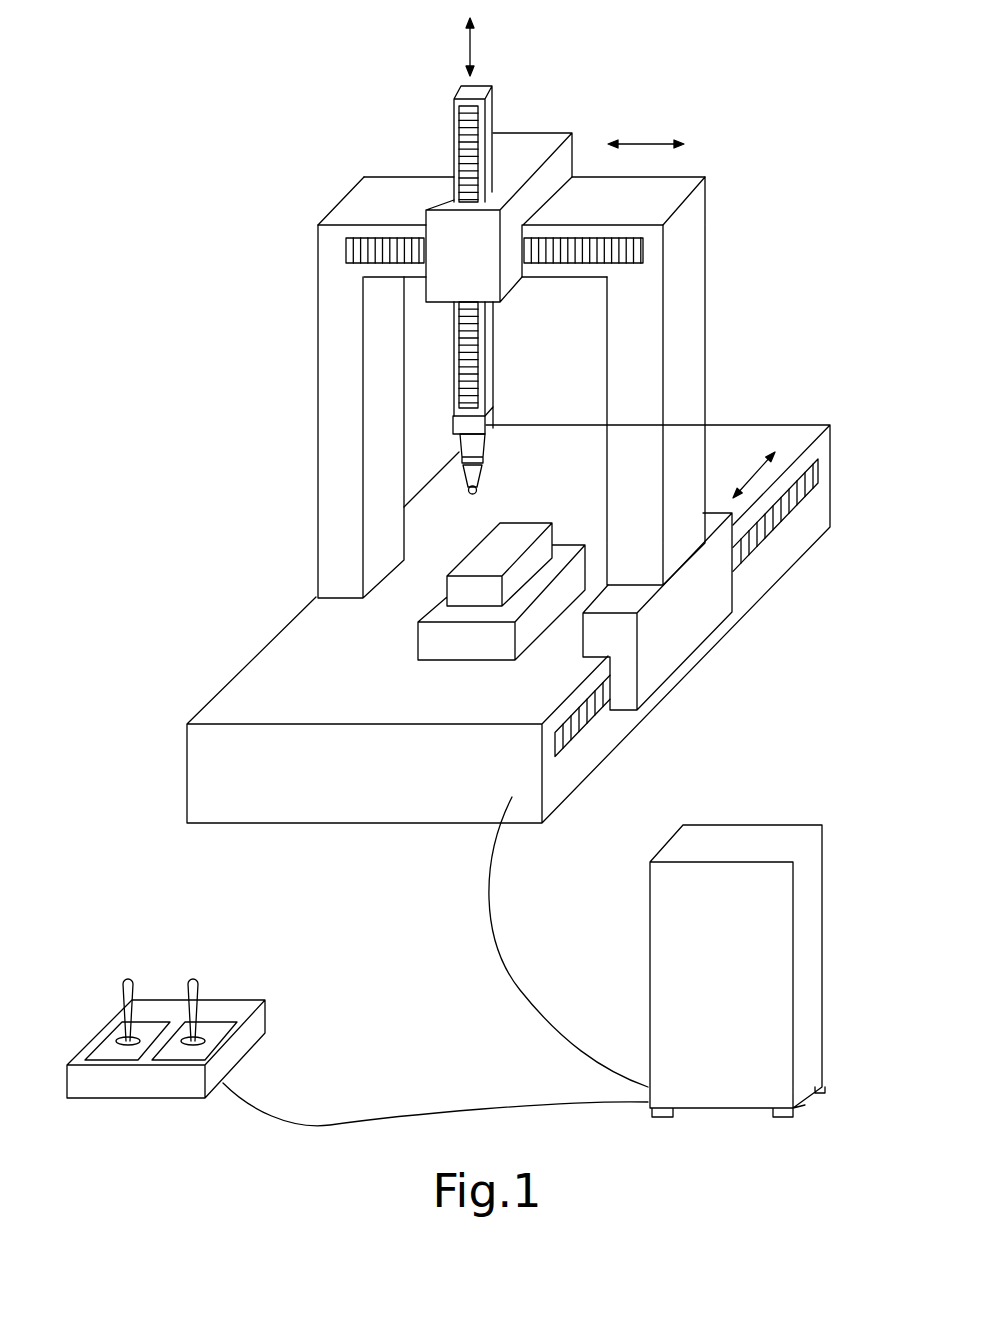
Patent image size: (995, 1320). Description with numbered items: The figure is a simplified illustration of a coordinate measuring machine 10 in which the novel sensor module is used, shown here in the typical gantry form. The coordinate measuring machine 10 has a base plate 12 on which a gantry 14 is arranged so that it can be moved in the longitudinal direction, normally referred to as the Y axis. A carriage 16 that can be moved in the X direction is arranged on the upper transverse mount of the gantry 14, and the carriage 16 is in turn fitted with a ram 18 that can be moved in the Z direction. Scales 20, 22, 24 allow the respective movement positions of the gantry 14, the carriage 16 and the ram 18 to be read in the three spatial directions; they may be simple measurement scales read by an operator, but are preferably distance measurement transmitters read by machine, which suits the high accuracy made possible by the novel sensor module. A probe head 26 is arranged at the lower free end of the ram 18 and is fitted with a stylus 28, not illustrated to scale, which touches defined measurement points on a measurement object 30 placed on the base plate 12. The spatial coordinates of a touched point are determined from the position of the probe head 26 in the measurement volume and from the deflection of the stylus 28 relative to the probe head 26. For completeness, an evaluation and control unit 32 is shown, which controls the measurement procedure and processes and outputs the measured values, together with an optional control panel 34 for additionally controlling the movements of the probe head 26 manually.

The coordinate measuring machine 10 is at (497, 411).
The base plate 12 is at (235, 698).
The gantry 14 is at (330, 340).
The carriage 16 is at (445, 205).
The ram 18 is at (460, 90).
The scale 20 is at (772, 520).
The scale 22 is at (635, 250).
The scale 24 is at (476, 135).
The probe head 26 is at (500, 450).
The stylus 28 is at (463, 480).
The measurement object 30 is at (482, 563).
The evaluation and control unit 32 is at (745, 848).
The control panel 34 is at (260, 980).